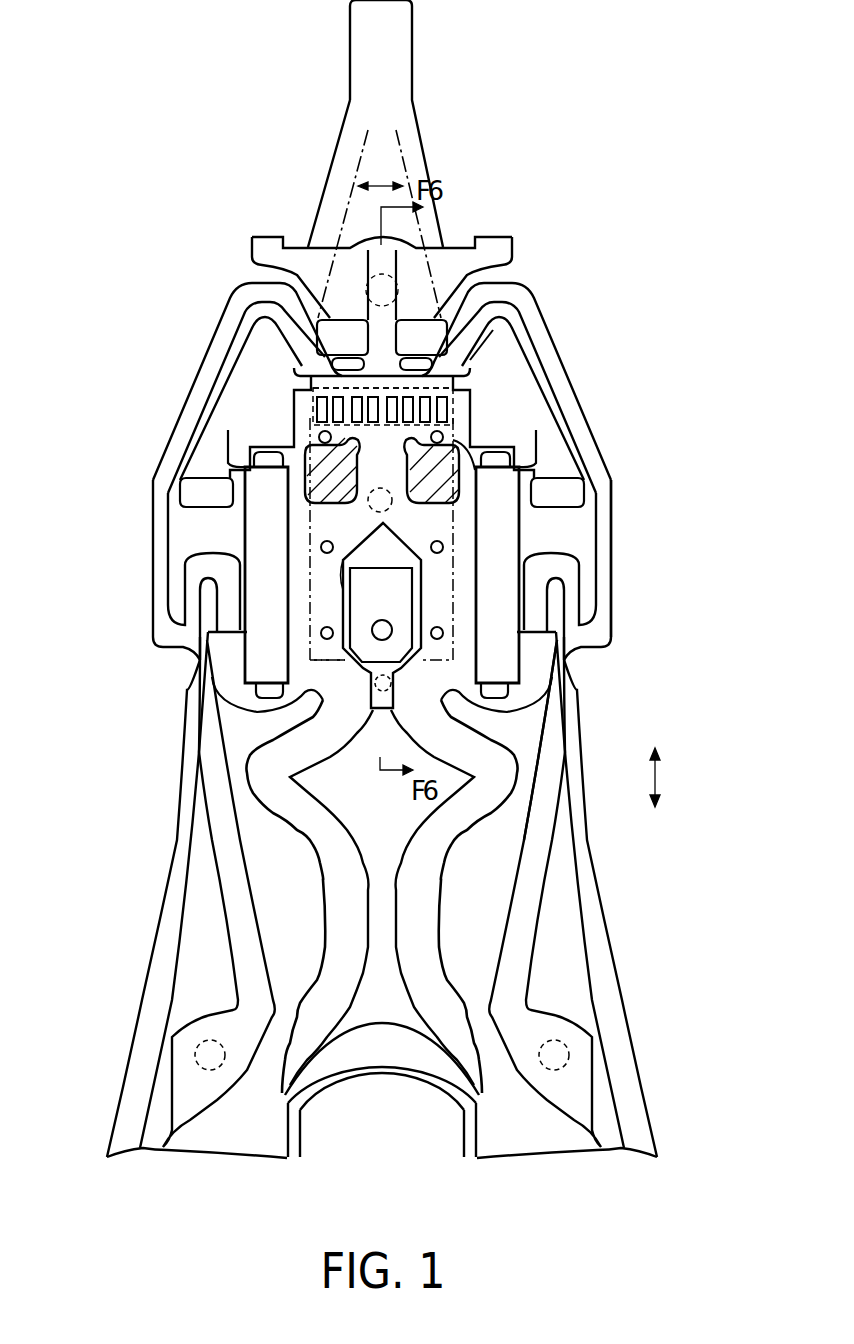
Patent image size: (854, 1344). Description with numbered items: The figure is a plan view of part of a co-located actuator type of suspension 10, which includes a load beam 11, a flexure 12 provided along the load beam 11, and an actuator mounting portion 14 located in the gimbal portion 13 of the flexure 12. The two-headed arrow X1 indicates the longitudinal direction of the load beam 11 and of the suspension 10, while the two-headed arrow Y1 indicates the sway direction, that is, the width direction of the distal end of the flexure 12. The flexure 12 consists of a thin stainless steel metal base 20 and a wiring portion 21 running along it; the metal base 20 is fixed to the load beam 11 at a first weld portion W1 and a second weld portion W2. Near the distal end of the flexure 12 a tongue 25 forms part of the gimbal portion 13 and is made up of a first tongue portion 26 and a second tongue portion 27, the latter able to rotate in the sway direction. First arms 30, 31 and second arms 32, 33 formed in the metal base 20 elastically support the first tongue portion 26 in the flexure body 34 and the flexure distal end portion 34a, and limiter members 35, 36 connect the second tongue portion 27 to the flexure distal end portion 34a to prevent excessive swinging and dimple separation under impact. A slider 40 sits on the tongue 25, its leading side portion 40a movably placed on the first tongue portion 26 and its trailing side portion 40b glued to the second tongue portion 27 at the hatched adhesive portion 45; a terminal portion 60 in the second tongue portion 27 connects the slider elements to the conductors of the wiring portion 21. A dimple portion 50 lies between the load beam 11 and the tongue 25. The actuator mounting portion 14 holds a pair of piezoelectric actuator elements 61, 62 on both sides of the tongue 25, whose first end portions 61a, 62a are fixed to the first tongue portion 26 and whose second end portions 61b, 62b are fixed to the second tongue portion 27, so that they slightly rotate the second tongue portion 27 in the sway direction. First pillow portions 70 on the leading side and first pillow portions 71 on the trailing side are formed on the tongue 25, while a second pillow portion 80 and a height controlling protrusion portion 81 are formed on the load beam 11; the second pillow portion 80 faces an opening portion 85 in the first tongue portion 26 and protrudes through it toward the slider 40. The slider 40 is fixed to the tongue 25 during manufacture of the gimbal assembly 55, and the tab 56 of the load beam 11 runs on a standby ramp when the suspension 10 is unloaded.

The suspension 10 is at (683, 208).
The load beam 11 is at (575, 982).
The flexure 12 is at (164, 1105).
The gimbal portion 13 is at (505, 385).
The actuator mounting portion 14 is at (538, 487).
The metal base 20 is at (210, 1020).
The wiring portion 21 is at (333, 906).
The tongue 25 is at (537, 707).
The first tongue portion 26 is at (510, 595).
The second tongue portion 27 is at (480, 445).
The first arm 30 is at (225, 872).
The first arm 31 is at (530, 910).
The second arm 32 is at (215, 352).
The second arm 33 is at (560, 390).
The flexure body 34 is at (297, 1105).
The flexure distal end portion 34a is at (440, 268).
The limiter member 35 is at (248, 345).
The limiter member 36 is at (520, 335).
The slider 40 is at (480, 517).
The leading side portion 40a is at (310, 660).
The trailing side portion 40b is at (307, 390).
The adhesive portion 45 is at (307, 463).
The dimple portion 50 is at (380, 488).
The gimbal assembly 55 is at (157, 805).
The tab 56 is at (400, 38).
The terminal portion 60 is at (493, 330).
The actuator element 61 is at (253, 537).
The first end portion 61a is at (300, 705).
The second end portion 61b is at (262, 455).
The actuator element 62 is at (510, 537).
The first end portion 62a is at (470, 710).
The second end portion 62b is at (505, 455).
The first pillow portion 70 is at (327, 550).
The first pillow portion 71 is at (320, 437).
The second pillow portion 80 is at (382, 620).
The height controlling protrusion portion 81 is at (380, 692).
The opening portion 85 is at (343, 585).
The first weld portion W1 is at (370, 275).
The second weld portion W2 is at (195, 1060).
The longitudinal direction X1 is at (660, 780).
The sway direction Y1 is at (400, 180).